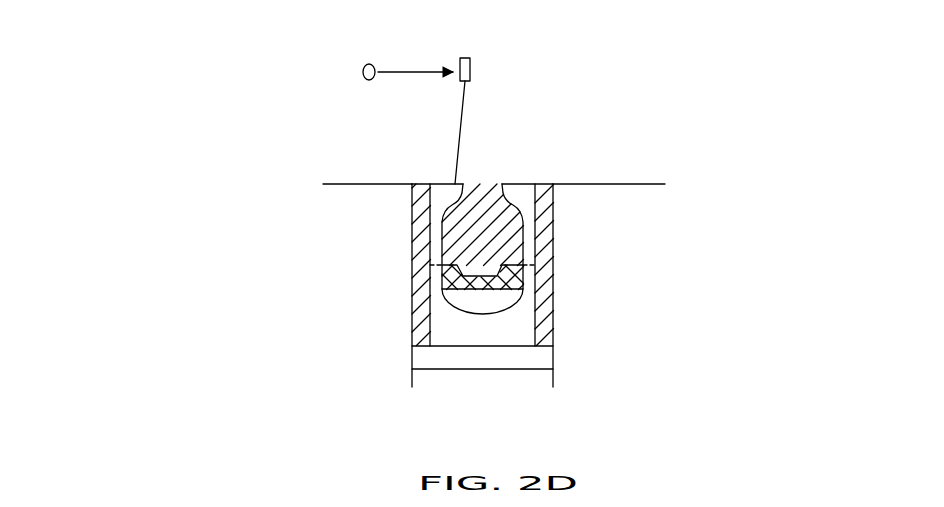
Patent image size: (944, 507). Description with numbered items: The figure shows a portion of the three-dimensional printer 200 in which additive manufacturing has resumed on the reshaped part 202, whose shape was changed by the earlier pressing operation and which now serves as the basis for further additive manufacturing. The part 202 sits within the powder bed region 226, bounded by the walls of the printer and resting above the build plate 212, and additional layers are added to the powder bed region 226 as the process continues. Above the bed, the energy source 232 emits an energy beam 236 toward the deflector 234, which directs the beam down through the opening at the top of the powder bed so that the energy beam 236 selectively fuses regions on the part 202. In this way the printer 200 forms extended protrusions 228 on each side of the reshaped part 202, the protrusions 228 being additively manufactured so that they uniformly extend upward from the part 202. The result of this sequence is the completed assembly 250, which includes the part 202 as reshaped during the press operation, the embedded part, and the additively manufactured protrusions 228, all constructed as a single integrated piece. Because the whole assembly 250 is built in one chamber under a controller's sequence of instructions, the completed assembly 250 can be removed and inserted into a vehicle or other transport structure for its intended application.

The 3-D printer 200 is at (225, 62).
The energy source 232 is at (389, 55).
The deflector 234 is at (507, 78).
The energy beam 236 is at (460, 133).
The assembly 250 is at (547, 318).
The powder bed region 226 is at (426, 256).
The part 202 is at (460, 328).
The extended protrusions 228 is at (525, 249).
The build plate 212 is at (553, 355).